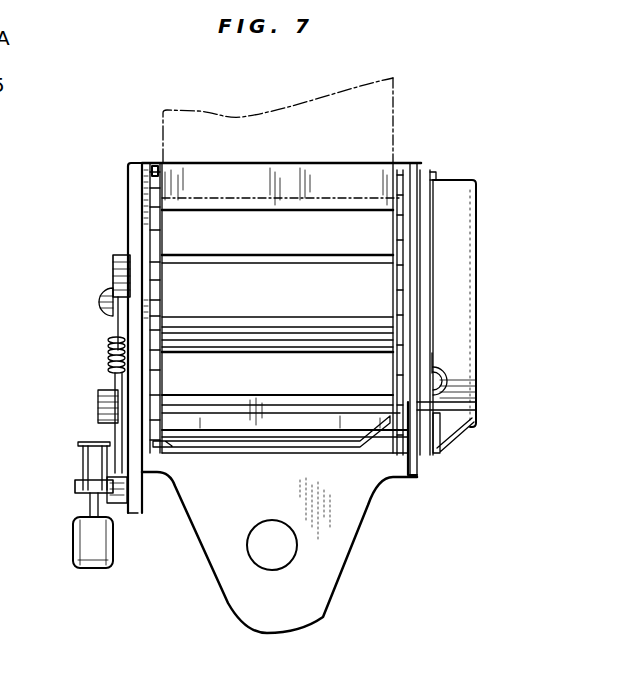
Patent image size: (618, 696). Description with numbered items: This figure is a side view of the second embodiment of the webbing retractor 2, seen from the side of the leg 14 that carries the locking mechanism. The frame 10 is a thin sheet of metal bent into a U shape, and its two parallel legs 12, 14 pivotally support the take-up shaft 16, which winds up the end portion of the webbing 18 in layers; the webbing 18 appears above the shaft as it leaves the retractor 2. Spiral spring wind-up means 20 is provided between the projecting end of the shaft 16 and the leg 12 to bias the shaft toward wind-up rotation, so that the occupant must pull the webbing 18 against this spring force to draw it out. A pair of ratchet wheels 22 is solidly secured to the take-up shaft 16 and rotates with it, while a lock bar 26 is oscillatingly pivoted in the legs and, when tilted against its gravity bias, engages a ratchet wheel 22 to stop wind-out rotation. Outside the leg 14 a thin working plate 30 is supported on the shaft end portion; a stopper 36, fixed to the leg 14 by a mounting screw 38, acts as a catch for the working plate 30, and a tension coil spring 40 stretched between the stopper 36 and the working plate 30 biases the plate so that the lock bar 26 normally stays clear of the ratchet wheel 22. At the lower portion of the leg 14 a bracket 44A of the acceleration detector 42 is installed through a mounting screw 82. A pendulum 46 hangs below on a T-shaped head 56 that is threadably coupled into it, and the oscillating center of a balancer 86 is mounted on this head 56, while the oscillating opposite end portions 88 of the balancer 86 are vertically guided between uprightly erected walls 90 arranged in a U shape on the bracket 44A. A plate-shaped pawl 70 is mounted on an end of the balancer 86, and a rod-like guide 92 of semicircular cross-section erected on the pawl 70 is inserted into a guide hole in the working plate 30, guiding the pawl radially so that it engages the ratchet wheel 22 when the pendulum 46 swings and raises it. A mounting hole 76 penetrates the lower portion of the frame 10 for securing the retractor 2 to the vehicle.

The apparatus 2 is at (33, 456).
The frame 10 is at (380, 163).
The leg 12 is at (413, 177).
The leg 14 is at (131, 192).
The take-up shaft 16 is at (268, 255).
The webbing 18 is at (225, 118).
The spiral spring wind-up means 20 is at (478, 247).
The ratchet wheel 22 is at (154, 170).
The lock bar 26 is at (254, 445).
The working plate 30 is at (115, 395).
The stopper 36 is at (120, 256).
The mounting screw 38 is at (100, 292).
The tension coil spring 40 is at (108, 345).
The acceleration detector 42 is at (18, 38).
The bracket 44A is at (112, 503).
The pendulum 46 is at (93, 555).
The head 56 is at (78, 486).
The pawl 70 is at (172, 455).
The mounting hole 76 is at (262, 560).
The mounting screw 82 is at (30, 3).
The balancer 86 is at (83, 448).
The oscillating opposite end portions 88 is at (22, 4).
The walls 90 is at (80, 462).
The guide 92 is at (100, 412).